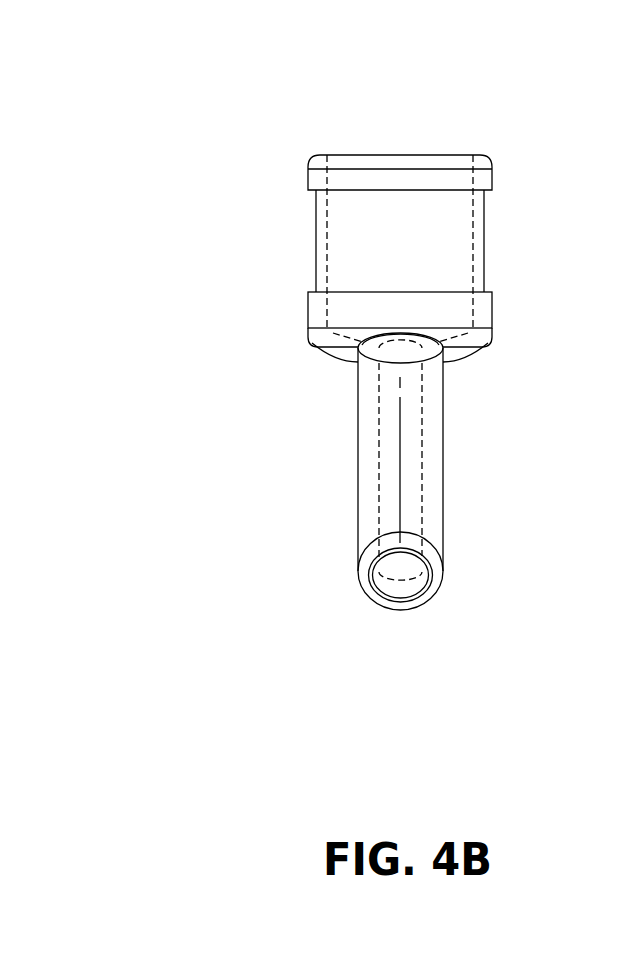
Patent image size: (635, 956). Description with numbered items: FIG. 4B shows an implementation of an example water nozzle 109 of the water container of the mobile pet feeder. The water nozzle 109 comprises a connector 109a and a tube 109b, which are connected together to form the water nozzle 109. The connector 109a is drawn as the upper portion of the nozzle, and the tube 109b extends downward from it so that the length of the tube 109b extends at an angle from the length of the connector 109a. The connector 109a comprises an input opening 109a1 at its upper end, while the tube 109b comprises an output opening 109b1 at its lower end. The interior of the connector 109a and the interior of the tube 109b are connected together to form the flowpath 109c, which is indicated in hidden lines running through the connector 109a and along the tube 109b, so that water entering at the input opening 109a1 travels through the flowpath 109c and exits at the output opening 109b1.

The water nozzle 109 is at (405, 337).
The connector 109a is at (462, 230).
The input opening 109a1 is at (473, 143).
The tube 109b is at (465, 493).
The output opening 109b1 is at (435, 612).
The flowpath 109c is at (327, 240).